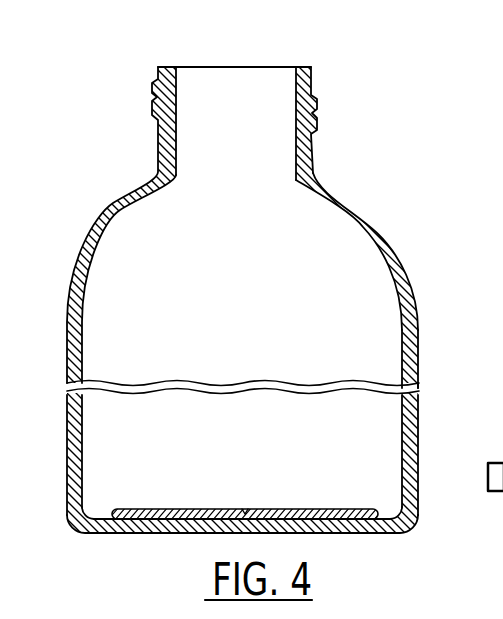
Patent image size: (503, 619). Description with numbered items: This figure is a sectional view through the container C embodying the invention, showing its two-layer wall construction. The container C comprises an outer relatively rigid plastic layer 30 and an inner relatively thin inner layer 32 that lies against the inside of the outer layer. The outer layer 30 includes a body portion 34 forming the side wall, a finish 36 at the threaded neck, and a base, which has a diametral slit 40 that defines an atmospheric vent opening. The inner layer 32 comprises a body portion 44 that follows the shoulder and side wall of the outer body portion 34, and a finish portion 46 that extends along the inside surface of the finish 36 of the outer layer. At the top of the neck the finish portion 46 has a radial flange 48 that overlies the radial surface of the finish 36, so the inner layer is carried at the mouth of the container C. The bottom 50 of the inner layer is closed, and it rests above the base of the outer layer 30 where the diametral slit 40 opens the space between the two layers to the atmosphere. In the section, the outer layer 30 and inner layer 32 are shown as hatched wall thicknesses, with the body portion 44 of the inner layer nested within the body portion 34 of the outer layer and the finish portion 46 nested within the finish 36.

The container C is at (410, 263).
The outer relatively rigid plastic layer 30 is at (66, 322).
The inner relatively thin inner layer 32 is at (84, 355).
The body portion 34 is at (418, 342).
The finish 36 is at (313, 150).
The diametral slit 40 is at (316, 522).
The body portion 44 is at (363, 240).
The finish portion 46 is at (294, 130).
The radial flange 48 is at (301, 66).
The bottom 50 is at (318, 510).